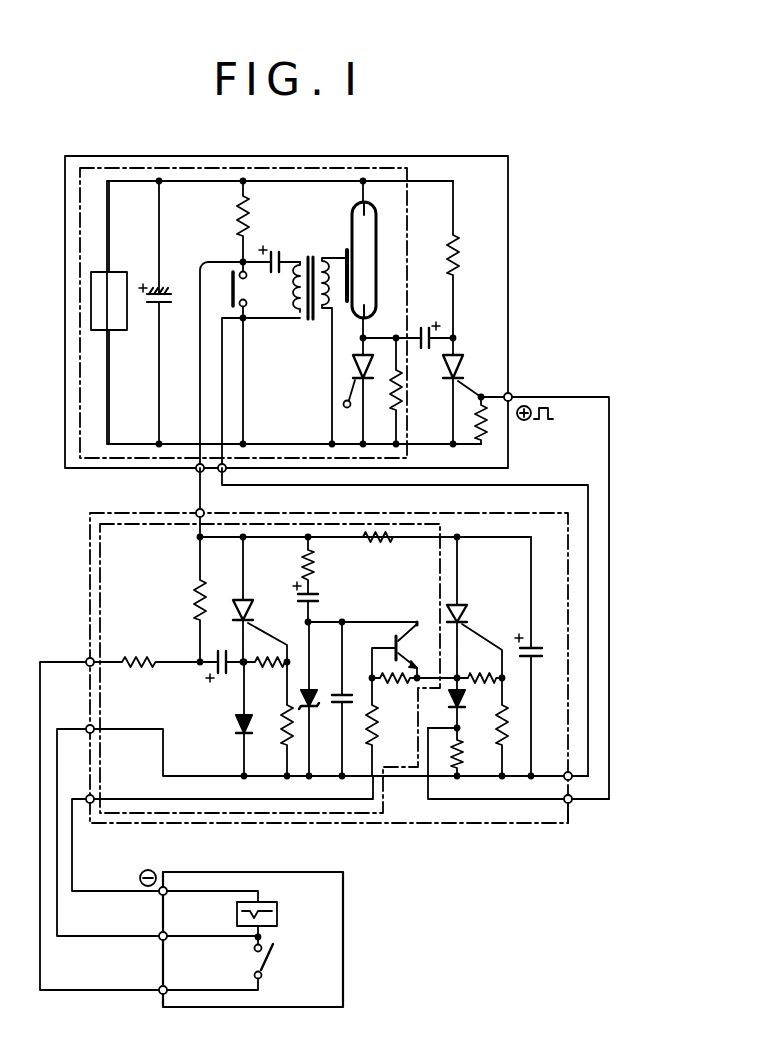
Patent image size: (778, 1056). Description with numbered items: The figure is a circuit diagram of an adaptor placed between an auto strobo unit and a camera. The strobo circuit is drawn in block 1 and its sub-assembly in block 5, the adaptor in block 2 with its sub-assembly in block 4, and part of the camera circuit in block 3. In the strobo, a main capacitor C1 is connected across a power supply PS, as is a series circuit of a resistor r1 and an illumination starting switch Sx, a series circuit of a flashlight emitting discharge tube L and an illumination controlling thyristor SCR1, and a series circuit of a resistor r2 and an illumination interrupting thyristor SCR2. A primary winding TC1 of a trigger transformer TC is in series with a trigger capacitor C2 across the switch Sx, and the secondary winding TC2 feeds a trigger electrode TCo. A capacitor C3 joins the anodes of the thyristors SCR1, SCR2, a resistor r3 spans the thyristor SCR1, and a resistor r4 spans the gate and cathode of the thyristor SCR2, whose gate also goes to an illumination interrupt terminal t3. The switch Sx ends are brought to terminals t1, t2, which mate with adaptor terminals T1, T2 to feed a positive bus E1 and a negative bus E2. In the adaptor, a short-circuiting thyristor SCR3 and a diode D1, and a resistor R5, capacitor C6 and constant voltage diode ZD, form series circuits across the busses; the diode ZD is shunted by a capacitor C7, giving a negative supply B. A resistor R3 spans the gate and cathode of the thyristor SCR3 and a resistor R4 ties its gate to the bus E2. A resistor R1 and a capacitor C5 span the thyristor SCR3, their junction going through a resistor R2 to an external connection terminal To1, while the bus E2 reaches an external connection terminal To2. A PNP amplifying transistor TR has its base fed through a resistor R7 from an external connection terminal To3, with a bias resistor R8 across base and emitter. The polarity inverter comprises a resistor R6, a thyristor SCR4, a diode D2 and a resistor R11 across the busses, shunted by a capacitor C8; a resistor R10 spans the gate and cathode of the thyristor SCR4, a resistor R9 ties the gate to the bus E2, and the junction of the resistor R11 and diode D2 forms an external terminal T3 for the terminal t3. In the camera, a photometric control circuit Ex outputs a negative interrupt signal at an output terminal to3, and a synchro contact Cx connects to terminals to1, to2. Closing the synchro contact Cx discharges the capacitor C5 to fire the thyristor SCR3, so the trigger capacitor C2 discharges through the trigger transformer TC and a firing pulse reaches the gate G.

The block 1 is at (510, 300).
The block 2 is at (468, 823).
The block 3 is at (343, 918).
The block 4 is at (98, 537).
The block 5 is at (80, 287).
The power supply PS is at (109, 312).
The main capacitor C1 is at (166, 305).
The resistor r1 is at (237, 218).
The trigger capacitor C2 is at (276, 246).
The illumination starting switch Sx is at (232, 288).
The trigger transformer TC is at (312, 320).
The primary winding TC1 is at (295, 290).
The secondary winding TC2 is at (336, 258).
The trigger electrode TCo is at (346, 236).
The flashlight emitting discharge tube L is at (376, 226).
The resistor r2 is at (459, 255).
The capacitor C3 is at (426, 324).
The illumination controlling thyristor SCR1 is at (354, 367).
The gate G is at (348, 409).
The resistor r3 is at (402, 392).
The illumination interrupting thyristor SCR2 is at (484, 360).
The resistor r4 is at (484, 438).
The terminal t1 is at (196, 474).
The terminal t2 is at (224, 474).
The illumination interrupt terminal t3 is at (511, 392).
The terminal T1 is at (196, 518).
The terminal T2 is at (564, 771).
The external terminal T3 is at (572, 803).
The positive bus E1 is at (270, 536).
The negative bus E2 is at (398, 777).
The resistor R1 is at (194, 602).
The short-circuiting thyristor SCR3 is at (247, 602).
The negative supply B is at (307, 622).
The resistor R5 is at (315, 568).
The capacitor C6 is at (316, 600).
The resistor R6 is at (378, 542).
The constant voltage diode ZD is at (328, 688).
The capacitor C7 is at (362, 684).
The PNP amplifying transistor TR is at (414, 645).
The bias resistor R8 is at (388, 683).
The resistor R7 is at (378, 726).
The resistor R2 is at (140, 656).
The capacitor C5 is at (222, 650).
The resistor R3 is at (268, 668).
The diode D1 is at (236, 730).
The resistor R4 is at (280, 724).
The thyristor SCR4 is at (462, 609).
The resistor R10 is at (480, 673).
The diode D2 is at (449, 700).
The resistor R11 is at (462, 752).
The resistor R9 is at (496, 728).
The capacitor C8 is at (536, 660).
The external connection terminal To1 is at (86, 657).
The external connection terminal To2 is at (94, 724).
The external connection terminal To3 is at (94, 794).
The terminal to1 is at (160, 995).
The terminal to2 is at (160, 941).
The output terminal to3 is at (160, 896).
The photometric control circuit Ex is at (277, 916).
The synchro contact Cx is at (268, 960).